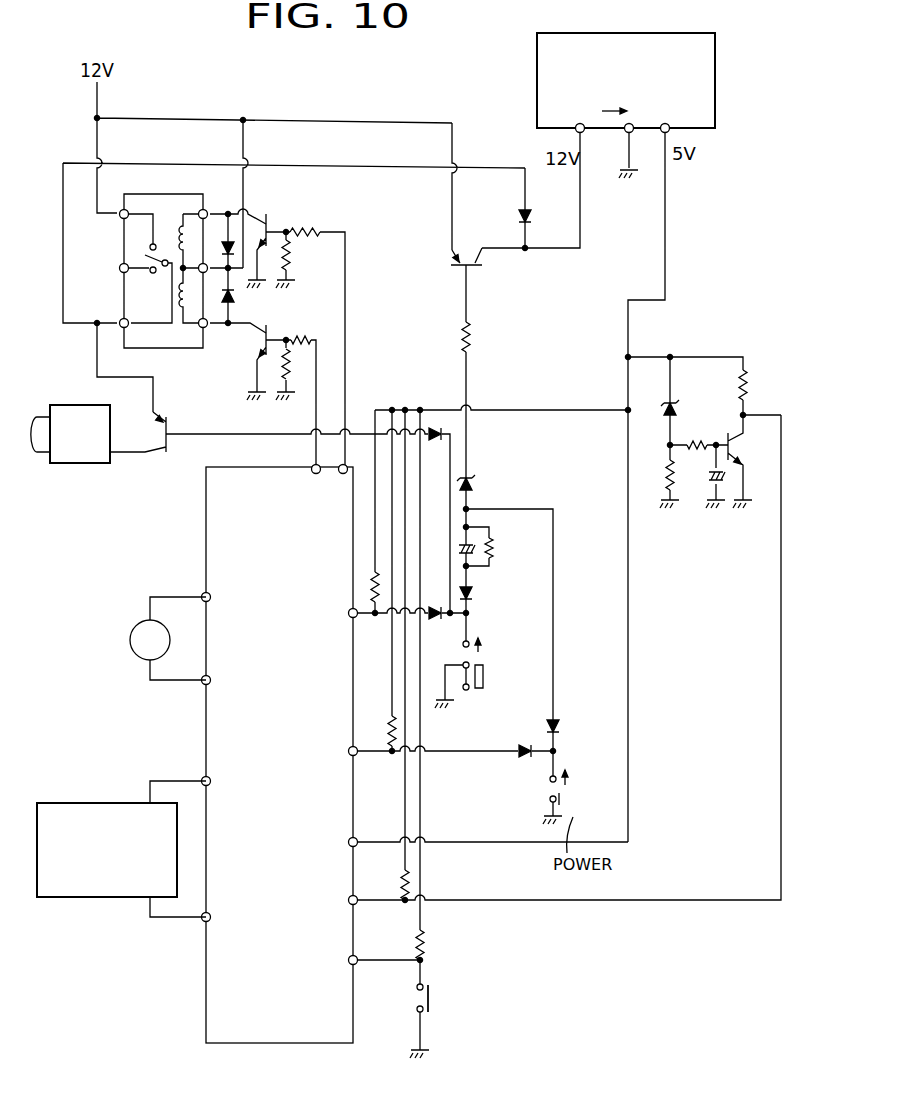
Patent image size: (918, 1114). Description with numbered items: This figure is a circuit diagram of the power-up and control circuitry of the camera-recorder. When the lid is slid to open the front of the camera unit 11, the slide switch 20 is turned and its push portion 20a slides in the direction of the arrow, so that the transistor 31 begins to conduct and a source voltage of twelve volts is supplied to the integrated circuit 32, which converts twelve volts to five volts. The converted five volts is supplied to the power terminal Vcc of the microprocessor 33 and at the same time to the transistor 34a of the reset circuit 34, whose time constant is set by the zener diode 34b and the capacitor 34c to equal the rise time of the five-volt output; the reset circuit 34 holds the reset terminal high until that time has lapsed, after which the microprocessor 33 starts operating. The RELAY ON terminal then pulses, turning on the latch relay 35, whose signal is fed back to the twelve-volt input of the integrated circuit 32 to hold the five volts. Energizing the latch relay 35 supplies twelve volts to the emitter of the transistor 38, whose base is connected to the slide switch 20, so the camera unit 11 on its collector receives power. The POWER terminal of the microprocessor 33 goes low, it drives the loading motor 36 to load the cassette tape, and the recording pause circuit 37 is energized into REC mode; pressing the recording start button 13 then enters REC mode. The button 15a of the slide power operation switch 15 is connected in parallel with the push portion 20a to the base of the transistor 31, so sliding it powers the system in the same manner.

The camera unit 11 is at (79, 405).
The recording start button 13 is at (432, 993).
The slide power operation switch 15 is at (525, 806).
The button 15a is at (587, 768).
The slide switch 20 is at (527, 634).
The push portion 20a is at (483, 670).
The transistor 31 is at (467, 262).
The integrated circuit 32 is at (613, 33).
The microprocessor 33 is at (251, 1043).
The reset circuit 34 is at (702, 357).
The transistor 34a is at (740, 450).
The zener diode 34b is at (679, 415).
The capacitor 34c is at (700, 485).
The latch relay 35 is at (163, 194).
The loading motor 36 is at (130, 640).
The recording pause circuit 37 is at (93, 897).
The transistor 38 is at (170, 426).